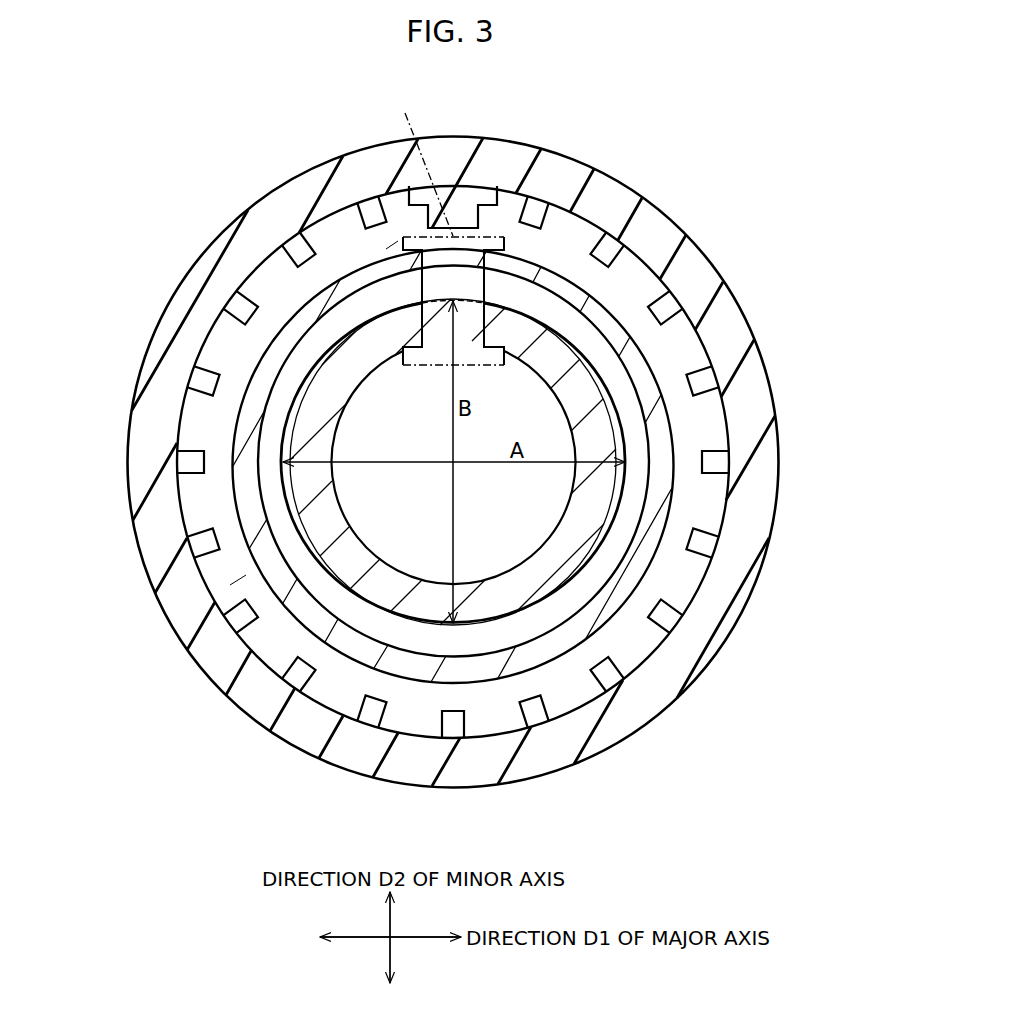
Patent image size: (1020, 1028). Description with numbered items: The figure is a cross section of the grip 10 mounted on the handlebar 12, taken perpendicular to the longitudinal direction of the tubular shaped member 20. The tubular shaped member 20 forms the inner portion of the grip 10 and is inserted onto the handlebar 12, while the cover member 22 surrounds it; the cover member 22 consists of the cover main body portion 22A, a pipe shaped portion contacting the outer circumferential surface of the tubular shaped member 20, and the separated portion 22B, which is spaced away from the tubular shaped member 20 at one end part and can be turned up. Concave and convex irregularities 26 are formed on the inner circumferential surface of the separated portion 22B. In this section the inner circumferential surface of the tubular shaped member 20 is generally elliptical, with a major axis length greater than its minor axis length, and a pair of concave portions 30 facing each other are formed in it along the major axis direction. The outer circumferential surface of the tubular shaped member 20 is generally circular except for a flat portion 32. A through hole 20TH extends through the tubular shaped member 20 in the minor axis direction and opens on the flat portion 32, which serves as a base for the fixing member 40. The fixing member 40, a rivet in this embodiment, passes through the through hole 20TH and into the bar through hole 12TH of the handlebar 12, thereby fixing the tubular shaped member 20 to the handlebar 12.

The grip 10 is at (616, 166).
The handlebar 12 is at (528, 578).
The bar through hole 12TH is at (437, 338).
The tubular shaped member 20 is at (580, 330).
The through hole 20TH is at (470, 270).
The cover member 22 is at (130, 168).
The cover main body portion 22A is at (300, 317).
The separated portion 22B is at (267, 220).
The concave and convex irregularities 26 is at (228, 596).
The concave portions 30 is at (292, 486).
The flat portion 32 is at (389, 246).
The fixing member 40 is at (420, 163).